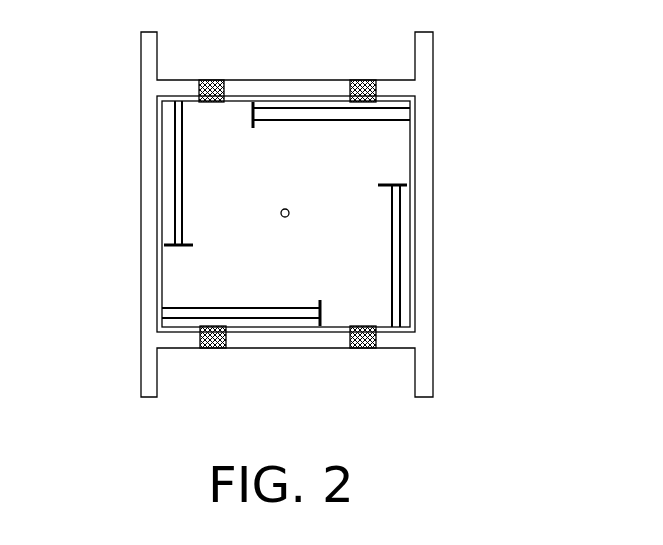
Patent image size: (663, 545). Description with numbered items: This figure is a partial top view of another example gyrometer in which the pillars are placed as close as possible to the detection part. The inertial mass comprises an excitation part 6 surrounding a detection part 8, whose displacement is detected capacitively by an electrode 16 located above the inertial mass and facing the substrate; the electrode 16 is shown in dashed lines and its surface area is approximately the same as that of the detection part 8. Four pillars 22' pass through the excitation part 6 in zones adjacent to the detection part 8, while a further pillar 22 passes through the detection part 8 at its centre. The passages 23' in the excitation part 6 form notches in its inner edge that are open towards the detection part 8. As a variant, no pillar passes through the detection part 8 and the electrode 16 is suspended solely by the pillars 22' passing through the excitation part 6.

The excitation part 6 is at (420, 218).
The detection part 8 is at (215, 208).
The electrode 16 is at (406, 284).
The pillar 22 is at (323, 231).
The pillars 22' is at (286, 216).
The passages 23' is at (287, 216).